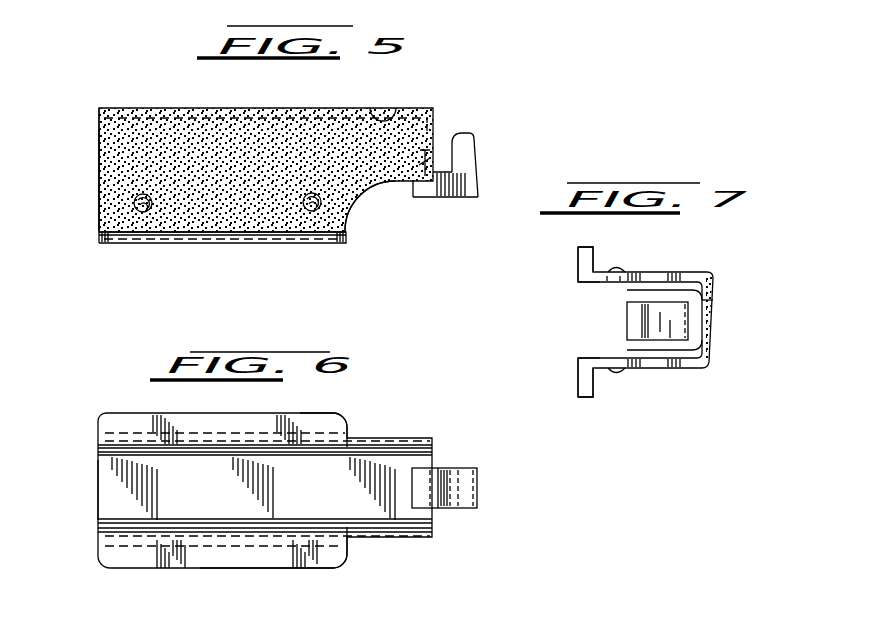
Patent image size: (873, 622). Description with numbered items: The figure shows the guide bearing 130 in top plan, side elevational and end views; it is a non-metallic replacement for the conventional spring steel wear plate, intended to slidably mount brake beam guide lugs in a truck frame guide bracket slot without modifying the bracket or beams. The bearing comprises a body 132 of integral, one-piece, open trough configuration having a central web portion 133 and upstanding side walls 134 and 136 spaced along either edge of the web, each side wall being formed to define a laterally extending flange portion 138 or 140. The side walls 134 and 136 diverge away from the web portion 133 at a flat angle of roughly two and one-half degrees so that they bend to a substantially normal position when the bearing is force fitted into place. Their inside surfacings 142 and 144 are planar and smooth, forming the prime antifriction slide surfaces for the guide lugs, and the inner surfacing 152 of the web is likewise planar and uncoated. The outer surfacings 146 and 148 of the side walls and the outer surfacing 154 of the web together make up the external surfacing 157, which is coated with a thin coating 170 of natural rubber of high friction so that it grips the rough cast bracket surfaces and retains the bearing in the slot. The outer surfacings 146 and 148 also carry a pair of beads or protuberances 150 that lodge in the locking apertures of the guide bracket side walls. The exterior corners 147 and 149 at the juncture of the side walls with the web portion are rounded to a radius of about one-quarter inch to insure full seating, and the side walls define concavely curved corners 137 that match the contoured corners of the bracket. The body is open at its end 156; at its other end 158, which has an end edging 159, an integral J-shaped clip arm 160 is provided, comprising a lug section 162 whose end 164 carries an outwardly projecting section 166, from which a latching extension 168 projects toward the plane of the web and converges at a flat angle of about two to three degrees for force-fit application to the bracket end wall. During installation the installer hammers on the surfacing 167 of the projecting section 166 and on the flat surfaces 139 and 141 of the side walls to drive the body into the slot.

In FIG. 5, the guide bearing 130 is at (528, 116).
In FIG. 5, the body 132 is at (166, 108).
In FIG. 5, the central web portion 133 is at (298, 110).
In FIG. 7, the central web portion 133 is at (713, 288).
In FIG. 6, the central web portion 133 is at (110, 490).
In FIG. 5, the side wall 134 is at (115, 193).
In FIG. 7, the side wall 134 is at (660, 280).
In FIG. 7, the side wall 136 is at (662, 368).
In FIG. 5, the concavely curved corners 137 is at (370, 190).
In FIG. 5, the laterally extending flange portion 138 is at (243, 238).
In FIG. 7, the laterally extending flange portion 138 is at (578, 258).
In FIG. 6, the laterally extending flange portion 138 is at (337, 425).
In FIG. 7, the flat surface 139 is at (578, 275).
In FIG. 6, the flat surface 139 is at (290, 425).
In FIG. 7, the laterally extending flange portion 140 is at (580, 397).
In FIG. 6, the laterally extending flange portion 140 is at (330, 557).
In FIG. 7, the flat surface 141 is at (578, 378).
In FIG. 6, the flat surface 141 is at (252, 550).
In FIG. 7, the inside surfacing 142 is at (600, 287).
In FIG. 6, the inside surfacing 142 is at (205, 454).
In FIG. 7, the inside surfacing 144 is at (600, 358).
In FIG. 6, the inside surfacing 144 is at (205, 525).
In FIG. 5, the outer surfacing 146 is at (238, 158).
In FIG. 7, the outer surfacing 146 is at (652, 272).
In FIG. 7, the exterior corner 147 is at (714, 272).
In FIG. 7, the outer surfacing 148 is at (683, 368).
In FIG. 7, the exterior corner 149 is at (709, 366).
In FIG. 5, the beads or protuberances 150 is at (141, 195).
In FIG. 6, the beads or protuberances 150 is at (147, 427).
In FIG. 6, the inner surfacing 152 is at (112, 505).
In FIG. 7, the outer surfacing 154 is at (712, 330).
In FIG. 5, the end 156 is at (99, 135).
In FIG. 5, the external surfacing 157 is at (190, 218).
In FIG. 7, the external surfacing 157 is at (711, 345).
In FIG. 5, the end 158 is at (430, 138).
In FIG. 5, the end edging 159 is at (435, 150).
In FIG. 5, the clip arm 160 is at (451, 198).
In FIG. 6, the clip arm 160 is at (457, 507).
In FIG. 5, the lug section 162 is at (393, 190).
In FIG. 5, the end 164 is at (425, 197).
In FIG. 5, the outwardly projecting section 166 is at (440, 198).
In FIG. 6, the outwardly projecting section 166 is at (444, 482).
In FIG. 5, the surfacing 167 is at (478, 197).
In FIG. 5, the latching extension 168 is at (468, 158).
In FIG. 5, the coating 170 is at (374, 122).
In FIG. 7, the coating 170 is at (713, 310).